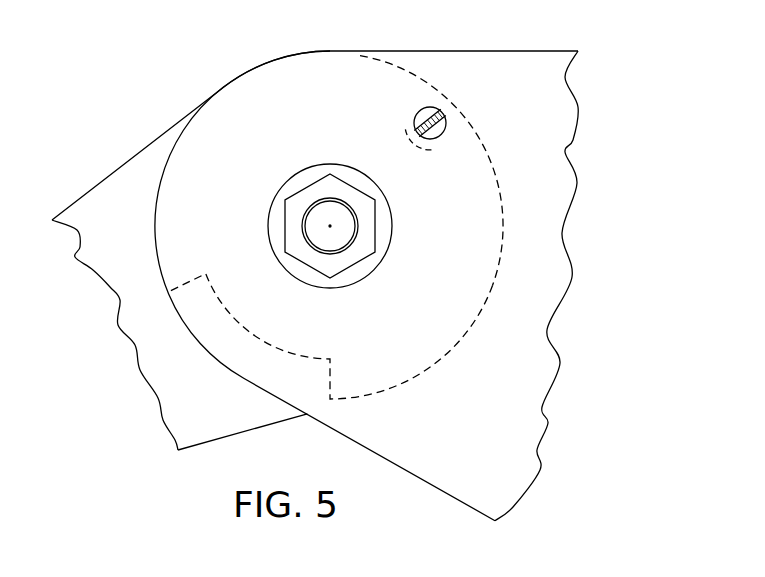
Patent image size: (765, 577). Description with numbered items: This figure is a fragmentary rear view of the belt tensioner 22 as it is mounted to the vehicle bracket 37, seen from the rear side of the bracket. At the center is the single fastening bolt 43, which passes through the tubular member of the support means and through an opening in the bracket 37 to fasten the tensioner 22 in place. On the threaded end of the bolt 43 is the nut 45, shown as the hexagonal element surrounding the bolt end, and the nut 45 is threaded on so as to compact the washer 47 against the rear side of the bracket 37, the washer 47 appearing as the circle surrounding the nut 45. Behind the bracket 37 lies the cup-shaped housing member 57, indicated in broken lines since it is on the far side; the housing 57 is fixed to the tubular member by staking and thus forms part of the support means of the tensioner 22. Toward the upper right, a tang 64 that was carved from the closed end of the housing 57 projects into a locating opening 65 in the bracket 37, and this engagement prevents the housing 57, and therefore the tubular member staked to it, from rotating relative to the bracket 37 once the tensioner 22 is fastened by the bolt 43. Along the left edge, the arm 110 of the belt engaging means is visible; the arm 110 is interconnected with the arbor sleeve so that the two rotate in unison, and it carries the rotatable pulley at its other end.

The tensioner 22 is at (432, 79).
The bracket 37 is at (545, 372).
The fastening bolt 43 is at (340, 230).
The nut 45 is at (293, 213).
The washer 47 is at (307, 177).
The cup-shaped housing member 57 is at (502, 212).
The tang 64 is at (440, 112).
The locating opening 65 is at (447, 123).
The arm 110 is at (105, 183).